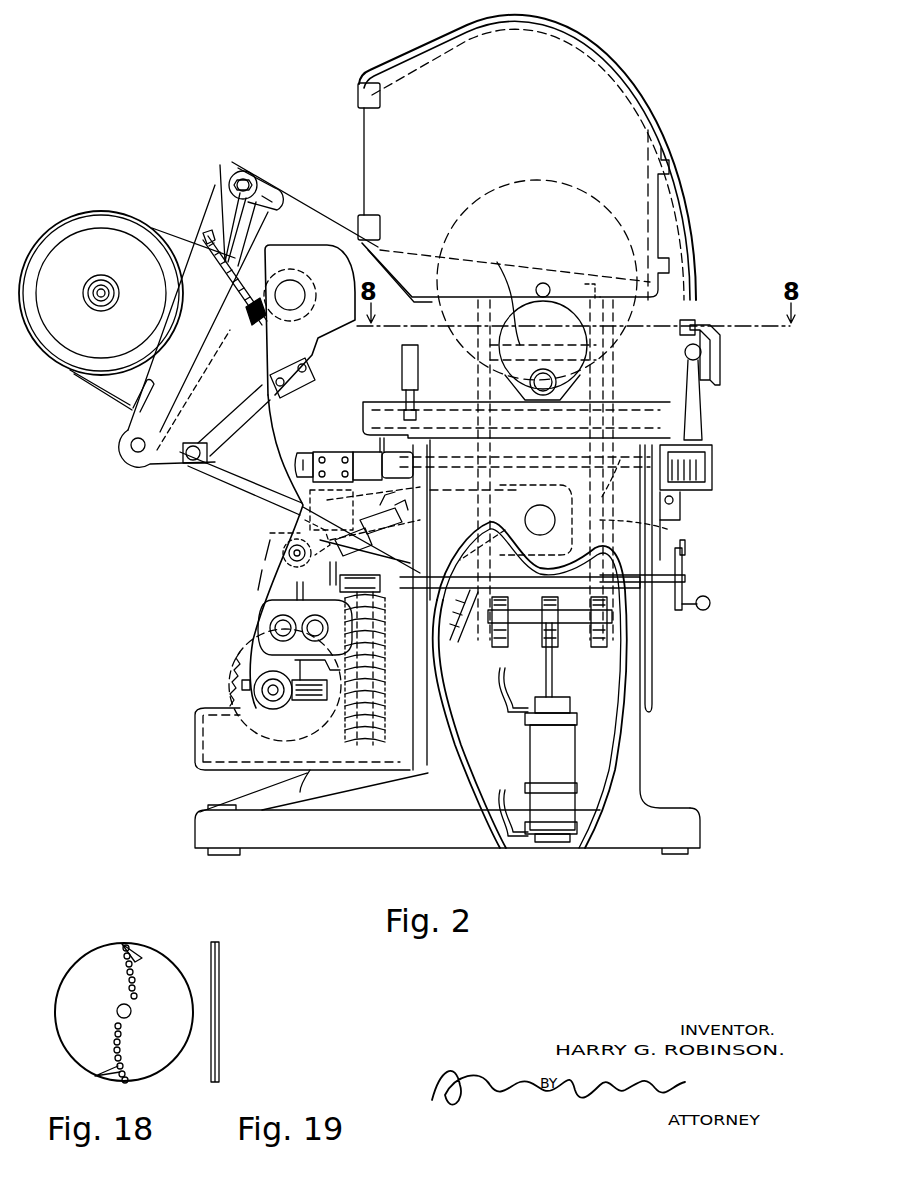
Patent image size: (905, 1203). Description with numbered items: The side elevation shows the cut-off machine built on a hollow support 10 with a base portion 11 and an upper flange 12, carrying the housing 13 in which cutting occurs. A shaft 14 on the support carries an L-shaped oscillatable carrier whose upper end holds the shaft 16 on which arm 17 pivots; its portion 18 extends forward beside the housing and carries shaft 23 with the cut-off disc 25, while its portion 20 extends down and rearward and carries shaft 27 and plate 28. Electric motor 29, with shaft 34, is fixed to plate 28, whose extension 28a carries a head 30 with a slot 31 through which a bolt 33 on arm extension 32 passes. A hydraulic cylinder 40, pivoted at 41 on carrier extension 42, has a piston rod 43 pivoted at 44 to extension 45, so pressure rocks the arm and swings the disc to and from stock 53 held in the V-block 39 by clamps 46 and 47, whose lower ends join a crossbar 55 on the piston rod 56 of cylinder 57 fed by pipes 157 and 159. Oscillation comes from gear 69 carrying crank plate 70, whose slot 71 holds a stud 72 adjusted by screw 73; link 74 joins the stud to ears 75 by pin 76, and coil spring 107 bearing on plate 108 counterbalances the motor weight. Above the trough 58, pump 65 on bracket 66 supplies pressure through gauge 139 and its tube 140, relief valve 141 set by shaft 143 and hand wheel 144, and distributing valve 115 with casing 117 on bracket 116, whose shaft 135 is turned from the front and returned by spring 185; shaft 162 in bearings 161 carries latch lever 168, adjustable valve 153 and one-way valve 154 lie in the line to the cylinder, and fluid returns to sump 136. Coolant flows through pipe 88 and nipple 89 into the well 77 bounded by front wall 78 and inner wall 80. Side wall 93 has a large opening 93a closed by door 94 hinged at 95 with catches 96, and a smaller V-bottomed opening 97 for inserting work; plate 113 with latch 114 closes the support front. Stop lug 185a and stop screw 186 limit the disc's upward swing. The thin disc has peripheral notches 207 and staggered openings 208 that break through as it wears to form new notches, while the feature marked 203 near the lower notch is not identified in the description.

In FIG. 2, the hollow support 10 is at (671, 737).
In FIG. 2, the base portion 11 is at (182, 836).
In FIG. 2, the vertically extending flange 12 is at (350, 410).
In FIG. 2, the housing 13 is at (717, 246).
In FIG. 2, the shaft 14 is at (555, 510).
In FIG. 2, the shaft 16 is at (292, 280).
In FIG. 2, the arm 17 is at (337, 255).
In FIG. 2, the arm portion 18 is at (372, 258).
In FIG. 2, the arm portion 20 is at (180, 462).
In FIG. 2, the shaft 23 is at (555, 280).
In FIG. 2, the cut-off disc 25 is at (540, 182).
In FIG. 18, the cut-off disc 25 is at (86, 934).
In FIG. 19, the cut-off disc 25 is at (234, 977).
In FIG. 2, the shaft 27 is at (131, 446).
In FIG. 2, the plate 28 is at (215, 300).
In FIG. 2, the extension 28a is at (212, 200).
In FIG. 2, the electric motor 29 is at (95, 245).
In FIG. 2, the head-like portion 30 is at (256, 172).
In FIG. 2, the slot 31 is at (278, 190).
In FIG. 2, the extension 32 is at (290, 195).
In FIG. 2, the bolt 33 is at (247, 171).
In FIG. 2, the motor shaft 34 is at (115, 285).
In FIG. 2, the V-block 39 is at (530, 512).
In FIG. 2, the cylinder 40 is at (298, 516).
In FIG. 2, the pivotal mounting 41 is at (480, 620).
In FIG. 2, the extension 42 is at (545, 577).
In FIG. 2, the piston rod 43 is at (240, 480).
In FIG. 2, the pivotal attachment 44 is at (198, 435).
In FIG. 2, the extension 45 is at (222, 440).
In FIG. 2, the clamp 46 is at (494, 514).
In FIG. 2, the clamp 47 is at (688, 550).
In FIG. 2, the stock 53 is at (555, 365).
In FIG. 2, the crossbar 55 is at (572, 620).
In FIG. 2, the piston rod 56 is at (545, 650).
In FIG. 2, the cylinder 57 is at (532, 733).
In FIG. 2, the trough 58 is at (198, 748).
In FIG. 2, the pump 65 is at (262, 615).
In FIG. 2, the bracket 66 is at (372, 640).
In FIG. 2, the gear 69 is at (232, 652).
In FIG. 2, the crank plate 70 is at (322, 702).
In FIG. 2, the slot 71 is at (300, 703).
In FIG. 2, the stud 72 is at (272, 707).
In FIG. 2, the screw 73 is at (240, 684).
In FIG. 2, the connecting rod 74 is at (270, 590).
In FIG. 2, the spaced ears 75 is at (300, 524).
In FIG. 2, the pin 76 is at (288, 553).
In FIG. 2, the well 77 is at (690, 294).
In FIG. 2, the front wall 78 is at (686, 195).
In FIG. 2, the inner wall 80 is at (580, 290).
In FIG. 2, the pipe 88 is at (722, 370).
In FIG. 2, the nipple 89 is at (700, 316).
In FIG. 2, the side wall 93 is at (690, 245).
In FIG. 2, the opening 93a is at (605, 48).
In FIG. 2, the door 94 is at (630, 125).
In FIG. 2, the hinge 95 is at (372, 95).
In FIG. 2, the catches 96 is at (665, 158).
In FIG. 2, the opening 97 is at (510, 288).
In FIG. 2, the coil spring 107 is at (400, 808).
In FIG. 2, the plate 108 is at (338, 563).
In FIG. 2, the plate 113 is at (652, 680).
In FIG. 2, the latch 114 is at (688, 578).
In FIG. 2, the distributing valve 115 is at (335, 445).
In FIG. 2, the bracket 116 is at (425, 500).
In FIG. 2, the valve casing 117 is at (300, 455).
In FIG. 2, the shaft 135 is at (621, 480).
In FIG. 2, the sump 136 is at (225, 705).
In FIG. 2, the pressure gauge 139 is at (408, 350).
In FIG. 2, the tube 140 is at (420, 418).
In FIG. 2, the pressure relief valve 141 is at (340, 588).
In FIG. 2, the shaft 143 is at (665, 600).
In FIG. 2, the hand wheel 144 is at (685, 600).
In FIG. 2, the adjustable valve 153 is at (372, 512).
In FIG. 2, the one way valve 154 is at (370, 542).
In FIG. 2, the pipe 157 is at (518, 770).
In FIG. 2, the pipe 159 is at (502, 675).
In FIG. 2, the bearings 161 is at (668, 525).
In FIG. 2, the shaft 162 is at (670, 505).
In FIG. 2, the latch lever 168 is at (675, 500).
In FIG. 2, the spring 185 is at (712, 480).
In FIG. 2, the stop lug 185a is at (320, 400).
In FIG. 2, the adjustable stop screw 186 is at (205, 232).
In FIG. 18, the holes 203 is at (95, 1060).
In FIG. 18, the notches 207 is at (122, 943).
In FIG. 18, the openings 208 is at (138, 954).